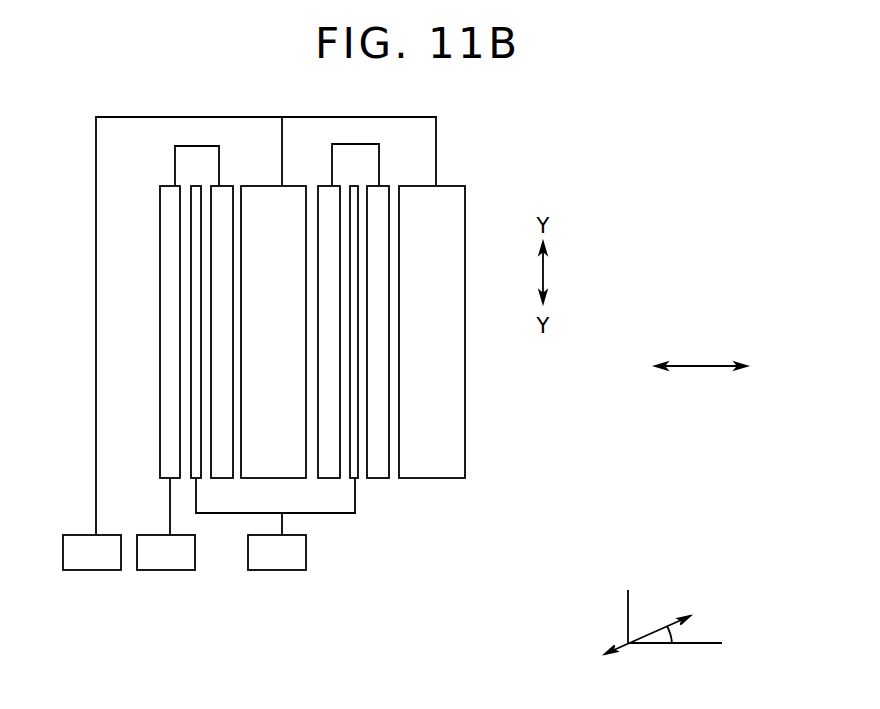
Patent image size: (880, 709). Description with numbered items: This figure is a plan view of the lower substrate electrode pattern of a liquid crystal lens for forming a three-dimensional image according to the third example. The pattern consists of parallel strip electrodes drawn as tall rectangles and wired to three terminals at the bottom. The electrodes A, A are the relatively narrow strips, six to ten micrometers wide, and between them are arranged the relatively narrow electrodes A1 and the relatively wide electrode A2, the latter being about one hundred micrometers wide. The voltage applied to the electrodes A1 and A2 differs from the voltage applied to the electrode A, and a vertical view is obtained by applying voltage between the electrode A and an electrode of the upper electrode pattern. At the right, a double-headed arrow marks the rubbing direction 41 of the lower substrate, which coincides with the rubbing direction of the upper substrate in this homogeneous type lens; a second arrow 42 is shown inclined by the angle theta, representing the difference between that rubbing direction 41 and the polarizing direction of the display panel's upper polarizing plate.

The rubbing direction of the lower substrate 41 is at (703, 365).
The second direction arrow at angle theta 42 is at (622, 642).
The electrode A is at (277, 552).
The electrode A1 is at (166, 552).
The electrode A2 is at (92, 552).